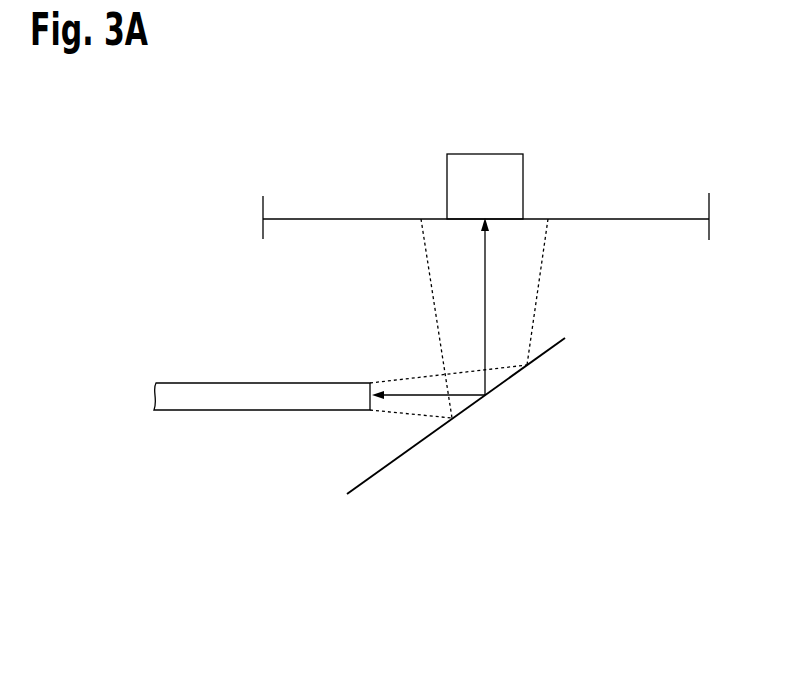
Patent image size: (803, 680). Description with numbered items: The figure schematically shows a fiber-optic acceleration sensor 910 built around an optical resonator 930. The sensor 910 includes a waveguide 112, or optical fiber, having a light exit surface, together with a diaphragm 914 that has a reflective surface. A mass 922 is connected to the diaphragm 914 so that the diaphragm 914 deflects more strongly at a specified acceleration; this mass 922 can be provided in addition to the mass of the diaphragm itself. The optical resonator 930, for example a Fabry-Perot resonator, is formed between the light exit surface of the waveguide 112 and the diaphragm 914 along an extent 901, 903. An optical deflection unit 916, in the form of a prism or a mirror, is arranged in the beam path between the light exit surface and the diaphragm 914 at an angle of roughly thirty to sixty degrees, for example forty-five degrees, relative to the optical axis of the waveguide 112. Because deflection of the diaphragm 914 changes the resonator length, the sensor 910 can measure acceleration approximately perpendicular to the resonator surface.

The fiber-optic acceleration sensor 910 is at (152, 134).
The diaphragm 914 is at (338, 219).
The mass 922 is at (525, 182).
The optical resonator 930 is at (515, 270).
The extent 901 is at (486, 308).
The extent 903 is at (427, 398).
The optical deflection unit 916 is at (467, 410).
The waveguide 112 is at (243, 413).